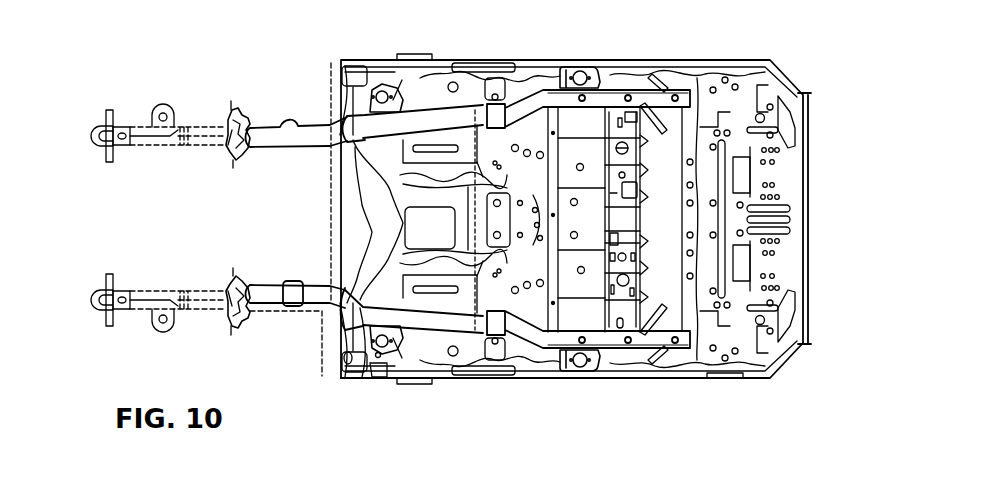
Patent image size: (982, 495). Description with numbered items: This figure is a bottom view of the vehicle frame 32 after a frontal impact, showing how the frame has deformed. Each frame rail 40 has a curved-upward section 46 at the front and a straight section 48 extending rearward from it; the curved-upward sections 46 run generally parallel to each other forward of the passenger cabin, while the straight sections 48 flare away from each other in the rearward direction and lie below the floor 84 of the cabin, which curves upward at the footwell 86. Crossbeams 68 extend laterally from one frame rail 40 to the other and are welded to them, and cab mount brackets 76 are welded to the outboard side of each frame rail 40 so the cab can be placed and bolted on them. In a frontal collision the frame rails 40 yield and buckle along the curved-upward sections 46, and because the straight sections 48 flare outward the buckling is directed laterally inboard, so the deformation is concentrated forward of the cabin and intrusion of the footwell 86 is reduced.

The vehicle frame 32 is at (86, 102).
The frame rail 40 is at (520, 100).
The curved-upward section 46 is at (324, 125).
The straight section 48 is at (427, 100).
The crossbeam 68 is at (640, 187).
The cab mount bracket 76 is at (388, 85).
The floor 84 is at (538, 380).
The footwell 86 is at (365, 212).